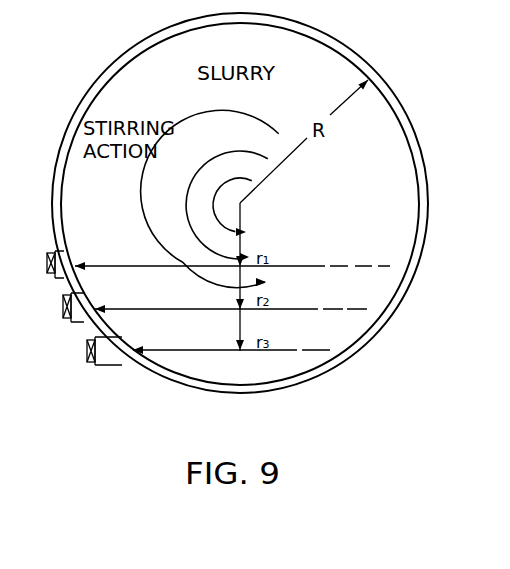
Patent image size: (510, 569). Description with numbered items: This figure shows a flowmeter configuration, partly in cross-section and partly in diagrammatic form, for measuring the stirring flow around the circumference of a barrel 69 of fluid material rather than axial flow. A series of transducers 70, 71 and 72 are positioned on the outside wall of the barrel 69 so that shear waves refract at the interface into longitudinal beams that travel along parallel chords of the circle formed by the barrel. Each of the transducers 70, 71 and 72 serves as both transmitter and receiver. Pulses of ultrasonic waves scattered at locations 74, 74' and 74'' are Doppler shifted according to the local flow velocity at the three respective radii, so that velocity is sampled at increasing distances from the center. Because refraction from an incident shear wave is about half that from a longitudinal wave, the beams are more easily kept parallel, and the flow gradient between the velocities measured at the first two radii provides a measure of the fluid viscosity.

The barrel 69 is at (403, 108).
The transducer 70 is at (58, 278).
The transducer 71 is at (77, 322).
The transducer 72 is at (103, 367).
The scattering location 74 is at (210, 202).
The scattering location 74' is at (206, 323).
The scattering location 74'' is at (212, 363).